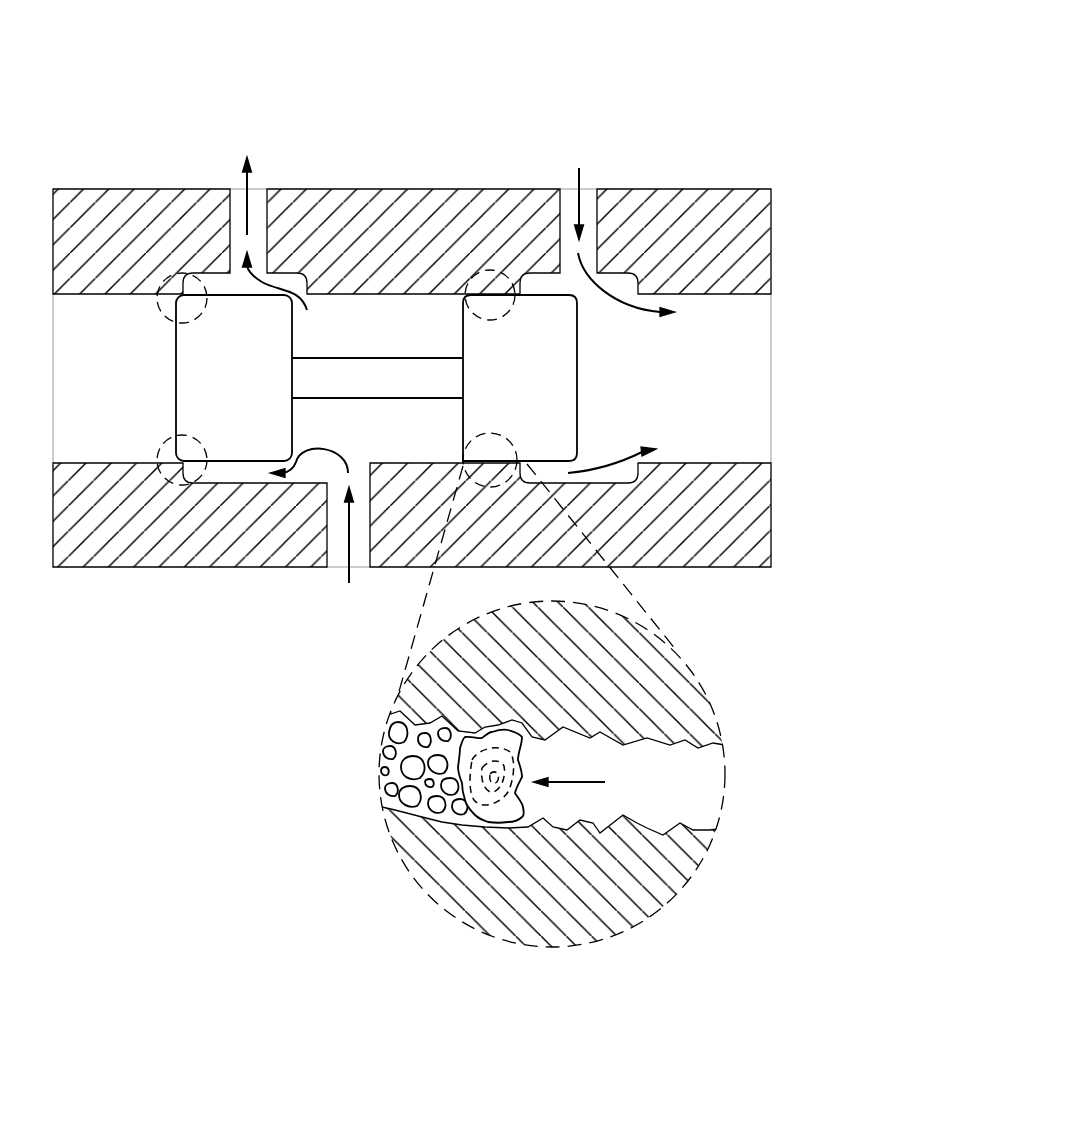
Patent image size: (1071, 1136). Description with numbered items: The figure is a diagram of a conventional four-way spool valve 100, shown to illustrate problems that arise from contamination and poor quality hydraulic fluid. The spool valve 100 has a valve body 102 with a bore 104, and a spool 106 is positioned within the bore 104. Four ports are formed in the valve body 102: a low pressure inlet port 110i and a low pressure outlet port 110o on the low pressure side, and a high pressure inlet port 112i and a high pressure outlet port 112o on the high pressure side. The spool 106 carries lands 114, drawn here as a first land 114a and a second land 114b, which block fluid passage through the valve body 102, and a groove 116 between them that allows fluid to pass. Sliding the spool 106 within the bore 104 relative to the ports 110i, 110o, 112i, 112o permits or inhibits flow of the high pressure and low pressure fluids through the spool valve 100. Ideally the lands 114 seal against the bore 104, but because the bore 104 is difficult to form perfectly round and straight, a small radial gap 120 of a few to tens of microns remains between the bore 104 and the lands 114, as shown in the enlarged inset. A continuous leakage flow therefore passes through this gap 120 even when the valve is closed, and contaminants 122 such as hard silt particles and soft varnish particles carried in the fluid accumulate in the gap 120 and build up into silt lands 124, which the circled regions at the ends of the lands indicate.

The four-way spool valve 100 is at (681, 60).
The valve body 102 is at (154, 536).
The bore 104 is at (92, 391).
The spool 106 is at (410, 357).
The low pressure inlet port 110i is at (585, 189).
The low pressure outlet port 110o is at (752, 365).
The high pressure inlet port 112i is at (337, 568).
The high pressure outlet port 112o is at (238, 189).
The lands 114 is at (578, 679).
The land 114a is at (214, 391).
The land 114b is at (492, 391).
The groove 116 is at (353, 391).
The radial gap 120 is at (733, 742).
The contaminants 122 is at (385, 765).
The silt lands 124 is at (163, 306).